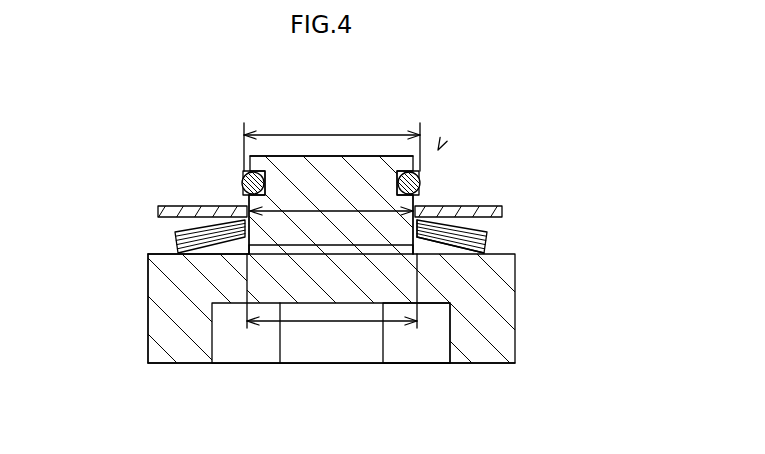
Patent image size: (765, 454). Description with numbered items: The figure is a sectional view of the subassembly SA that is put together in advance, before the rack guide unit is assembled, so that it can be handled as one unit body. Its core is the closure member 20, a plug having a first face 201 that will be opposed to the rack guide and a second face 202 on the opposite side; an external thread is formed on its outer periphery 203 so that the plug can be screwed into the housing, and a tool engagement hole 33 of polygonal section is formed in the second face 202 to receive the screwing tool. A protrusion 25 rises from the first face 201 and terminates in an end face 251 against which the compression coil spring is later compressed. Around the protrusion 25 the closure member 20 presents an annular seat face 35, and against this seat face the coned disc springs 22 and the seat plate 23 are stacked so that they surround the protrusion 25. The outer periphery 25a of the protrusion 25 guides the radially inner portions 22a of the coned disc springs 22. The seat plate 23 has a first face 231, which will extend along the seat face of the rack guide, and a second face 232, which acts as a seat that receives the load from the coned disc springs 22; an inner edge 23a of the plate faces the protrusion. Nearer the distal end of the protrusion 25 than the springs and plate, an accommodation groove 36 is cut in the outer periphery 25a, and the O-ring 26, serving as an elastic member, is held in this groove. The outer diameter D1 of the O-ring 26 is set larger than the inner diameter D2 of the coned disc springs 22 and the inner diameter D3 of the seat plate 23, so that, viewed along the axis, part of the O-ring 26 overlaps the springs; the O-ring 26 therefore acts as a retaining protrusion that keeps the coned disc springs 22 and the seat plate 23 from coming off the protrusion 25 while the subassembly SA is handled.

The closure member 20 is at (515, 305).
The first face 201 is at (161, 250).
The second face 202 is at (173, 363).
The outer periphery 203 is at (148, 308).
The coned disc springs 22 is at (487, 234).
The radially inner portions 22a is at (410, 213).
The seat plate 23 is at (502, 208).
The inner end of magnetic plate 23a is at (413, 197).
The first face 231 is at (159, 207).
The second face 232 is at (163, 220).
The protrusion 25 is at (368, 157).
The outer periphery 25a is at (248, 198).
The end face 251 is at (292, 157).
The O-ring 26 is at (423, 174).
The tool engagement hole 33 is at (418, 353).
The annular seat face 35 is at (472, 252).
The accommodation groove 36 is at (243, 176).
The outer diameter D1 is at (323, 135).
The inner diameter D2 is at (300, 322).
The inner diameter D3 is at (343, 211).
The subassembly SA is at (438, 150).